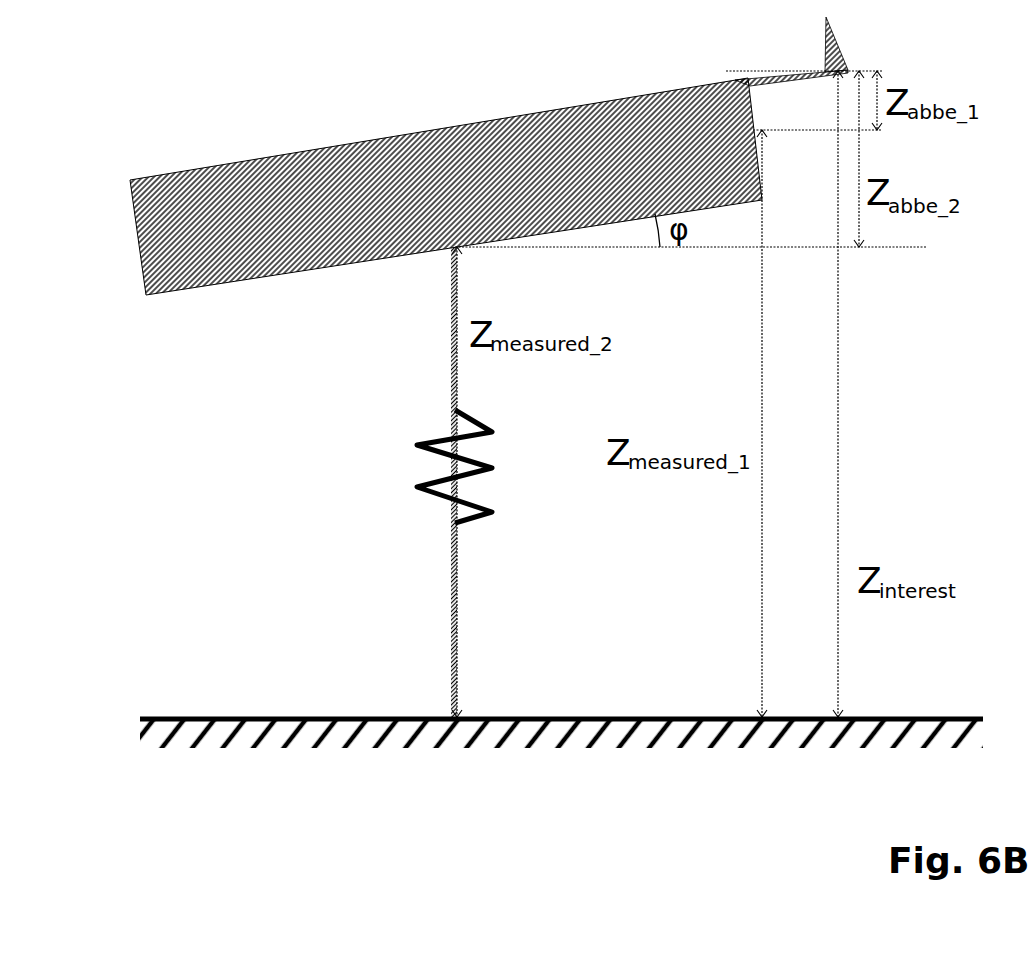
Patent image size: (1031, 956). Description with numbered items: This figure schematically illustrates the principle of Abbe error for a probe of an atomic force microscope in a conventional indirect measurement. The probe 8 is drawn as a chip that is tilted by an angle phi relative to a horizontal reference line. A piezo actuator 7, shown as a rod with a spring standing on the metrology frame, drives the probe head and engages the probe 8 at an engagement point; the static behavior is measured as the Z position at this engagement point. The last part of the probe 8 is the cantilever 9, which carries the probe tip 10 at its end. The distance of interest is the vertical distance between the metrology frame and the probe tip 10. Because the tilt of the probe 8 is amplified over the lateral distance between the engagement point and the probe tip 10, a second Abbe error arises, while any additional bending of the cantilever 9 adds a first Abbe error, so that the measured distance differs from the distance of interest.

The piezo actuator 7 is at (452, 608).
The probe 8 is at (245, 162).
The cantilever 9 is at (778, 72).
The probe tip 10 is at (838, 38).